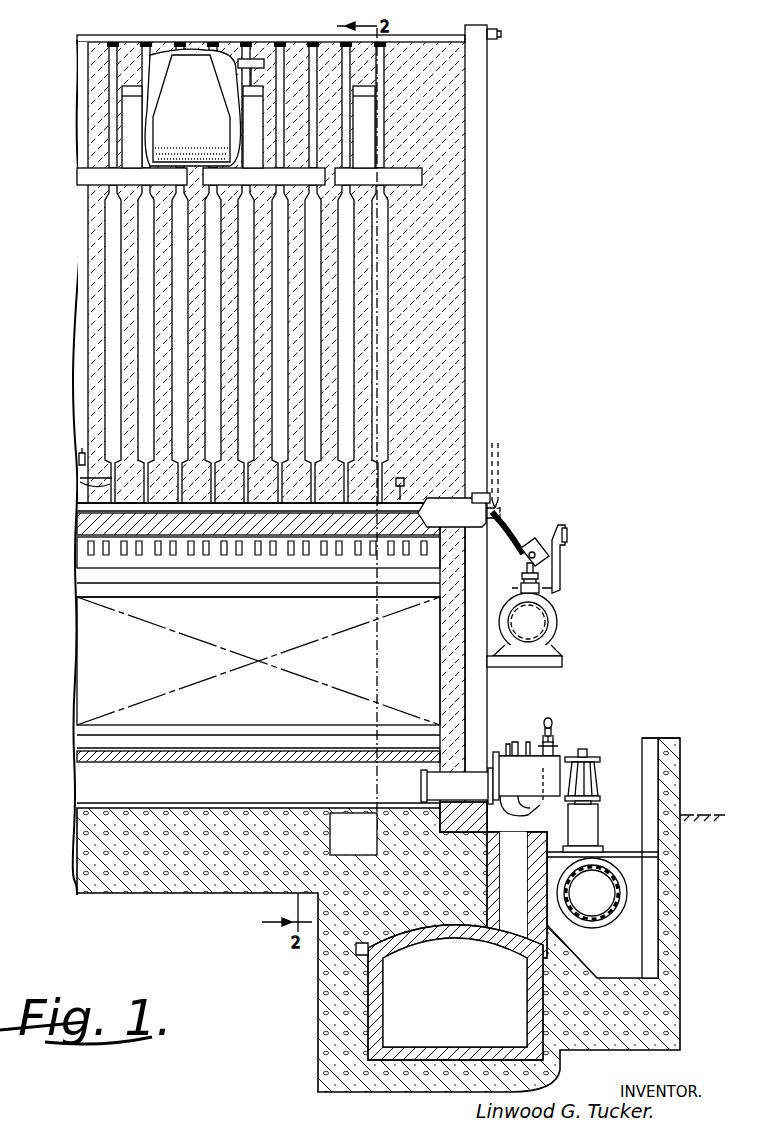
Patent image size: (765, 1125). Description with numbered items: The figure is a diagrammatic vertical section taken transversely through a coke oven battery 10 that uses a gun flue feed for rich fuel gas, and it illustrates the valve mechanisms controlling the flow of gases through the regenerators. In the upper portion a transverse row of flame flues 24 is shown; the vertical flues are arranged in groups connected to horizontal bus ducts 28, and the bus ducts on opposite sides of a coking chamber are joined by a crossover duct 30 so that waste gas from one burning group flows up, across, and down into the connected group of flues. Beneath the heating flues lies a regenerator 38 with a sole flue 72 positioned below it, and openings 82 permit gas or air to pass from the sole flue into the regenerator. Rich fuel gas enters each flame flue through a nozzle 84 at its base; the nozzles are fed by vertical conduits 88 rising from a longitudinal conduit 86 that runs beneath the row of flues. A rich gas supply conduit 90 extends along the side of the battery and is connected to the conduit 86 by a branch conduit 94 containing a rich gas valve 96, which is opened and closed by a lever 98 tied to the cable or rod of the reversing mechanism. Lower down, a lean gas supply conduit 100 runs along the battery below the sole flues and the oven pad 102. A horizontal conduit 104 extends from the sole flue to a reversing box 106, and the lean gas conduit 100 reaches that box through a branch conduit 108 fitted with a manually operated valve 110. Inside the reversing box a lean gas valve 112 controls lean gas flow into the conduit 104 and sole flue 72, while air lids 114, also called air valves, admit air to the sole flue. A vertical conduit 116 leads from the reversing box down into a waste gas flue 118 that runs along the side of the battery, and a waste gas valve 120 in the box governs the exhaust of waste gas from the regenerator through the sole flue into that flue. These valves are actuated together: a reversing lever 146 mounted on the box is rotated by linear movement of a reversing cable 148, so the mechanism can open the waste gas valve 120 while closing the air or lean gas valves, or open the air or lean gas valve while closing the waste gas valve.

The coke oven battery 10 is at (500, 301).
The transverse row of flame flues 24 is at (180, 326).
The horizontal bus duct 28 is at (249, 177).
The crossover duct 30 is at (132, 84).
The regenerator 38 is at (264, 692).
The sole flue 72 is at (272, 794).
The openings 82 is at (215, 763).
The nozzle 84 is at (80, 452).
The longitudinal conduit 86 is at (88, 506).
The vertical conduit 88 is at (82, 480).
The rich gas supply conduit 90 is at (540, 620).
The branch conduit 94 is at (512, 540).
The rich gas valve 96 is at (520, 585).
The lever 98 is at (566, 556).
The lean gas supply conduit 100 is at (602, 893).
The oven pad 102 is at (178, 896).
The conduit 104 is at (432, 786).
The reversing box 106 is at (558, 760).
The branch conduit 108 is at (598, 825).
The manually operated valve 110 is at (590, 755).
The lean gas control valve 112 is at (575, 780).
The air lids 114 is at (552, 740).
The vertical conduit 116 is at (512, 912).
The waste gas flue 118 is at (478, 1011).
The waste gas valve 120 is at (468, 770).
The reversing lever 146 is at (560, 740).
The reversing cable 148 is at (547, 718).